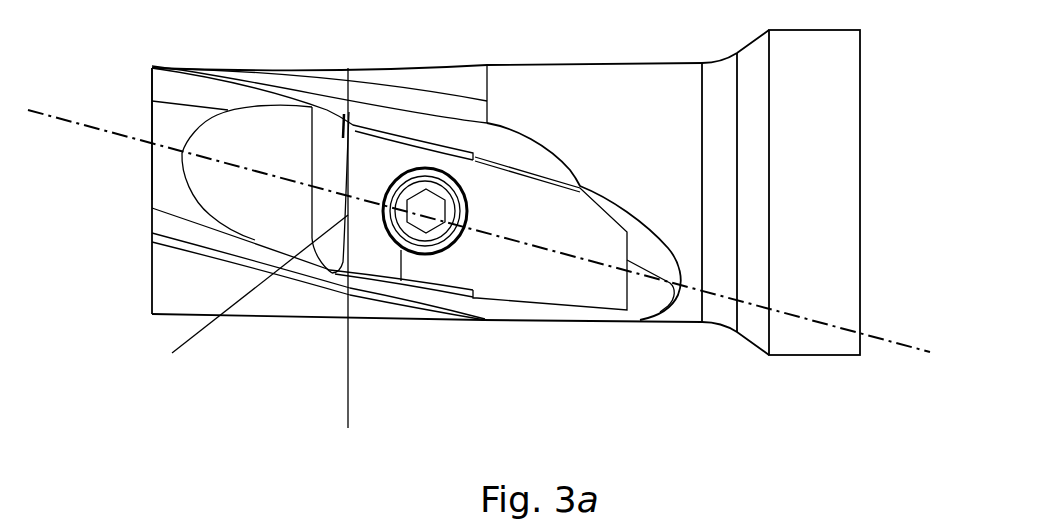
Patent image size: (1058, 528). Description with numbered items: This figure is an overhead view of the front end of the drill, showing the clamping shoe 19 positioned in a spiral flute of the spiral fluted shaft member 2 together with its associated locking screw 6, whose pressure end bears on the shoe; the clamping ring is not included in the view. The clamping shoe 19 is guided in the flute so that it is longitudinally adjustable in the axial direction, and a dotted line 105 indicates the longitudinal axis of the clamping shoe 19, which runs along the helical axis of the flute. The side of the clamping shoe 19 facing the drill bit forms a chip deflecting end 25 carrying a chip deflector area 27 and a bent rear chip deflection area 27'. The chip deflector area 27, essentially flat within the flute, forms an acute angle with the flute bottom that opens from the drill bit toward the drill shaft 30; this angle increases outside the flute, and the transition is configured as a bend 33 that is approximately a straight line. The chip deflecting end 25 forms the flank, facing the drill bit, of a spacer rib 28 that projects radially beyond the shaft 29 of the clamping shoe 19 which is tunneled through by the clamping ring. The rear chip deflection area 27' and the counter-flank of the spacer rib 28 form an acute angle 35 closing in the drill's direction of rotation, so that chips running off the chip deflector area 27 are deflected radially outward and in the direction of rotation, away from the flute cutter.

The spiral fluted shaft member 2 is at (446, 330).
The locking screw 6 is at (406, 250).
The clamping shoe 19 is at (545, 287).
The chip deflecting end 25 is at (183, 153).
The chip deflector area 27 is at (247, 172).
The rear chip deflection area 27' is at (312, 88).
The spacer rib 28 is at (347, 122).
The shaft of the clamping shoe 29 is at (503, 177).
The drill shaft 30 is at (838, 157).
The bend 33 is at (307, 150).
The acute angle 35 is at (183, 345).
The longitudinal axis of the clamping shoe 105 is at (907, 347).